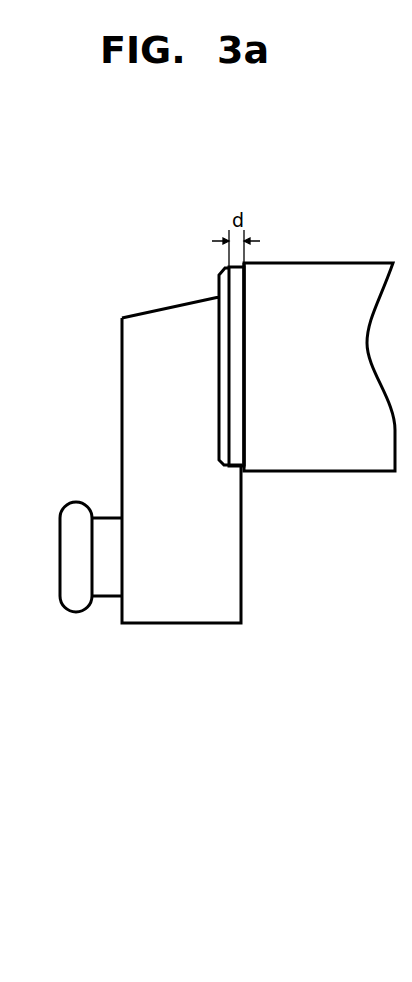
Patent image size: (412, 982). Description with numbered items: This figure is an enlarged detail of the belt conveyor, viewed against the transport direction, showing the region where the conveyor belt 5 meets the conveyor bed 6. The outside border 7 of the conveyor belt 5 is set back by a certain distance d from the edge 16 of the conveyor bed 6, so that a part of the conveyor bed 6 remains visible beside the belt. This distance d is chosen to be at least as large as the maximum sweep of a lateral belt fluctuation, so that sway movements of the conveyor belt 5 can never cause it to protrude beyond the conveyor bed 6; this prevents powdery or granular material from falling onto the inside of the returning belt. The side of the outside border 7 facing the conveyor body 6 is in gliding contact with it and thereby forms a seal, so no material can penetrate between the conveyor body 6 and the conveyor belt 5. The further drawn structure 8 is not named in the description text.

The conveyor belt 5 is at (340, 292).
The conveyor bed 6 is at (238, 430).
The outside border 7 is at (246, 263).
The holder 8 is at (178, 562).
The edge 16 is at (229, 267).